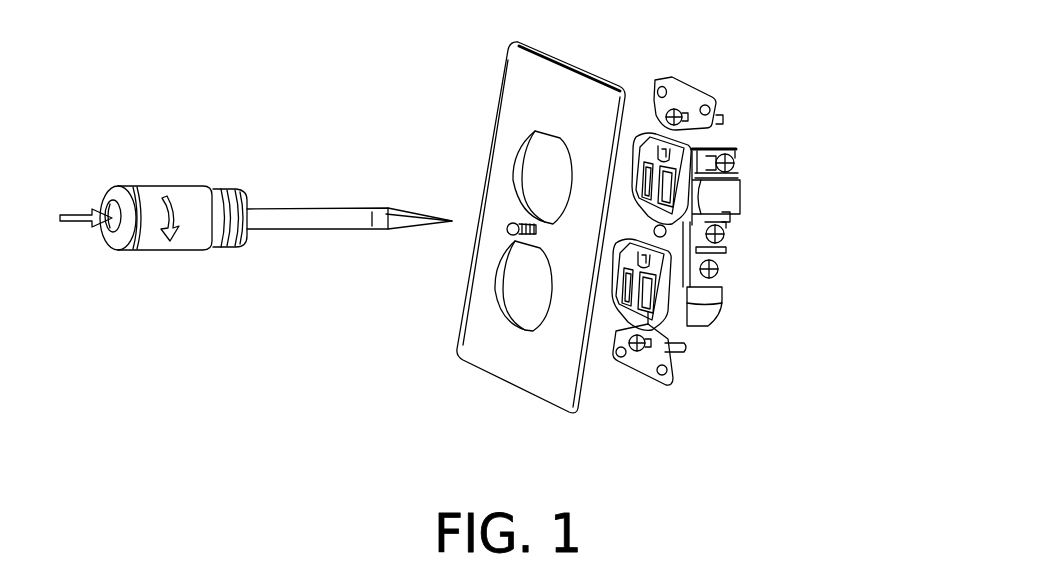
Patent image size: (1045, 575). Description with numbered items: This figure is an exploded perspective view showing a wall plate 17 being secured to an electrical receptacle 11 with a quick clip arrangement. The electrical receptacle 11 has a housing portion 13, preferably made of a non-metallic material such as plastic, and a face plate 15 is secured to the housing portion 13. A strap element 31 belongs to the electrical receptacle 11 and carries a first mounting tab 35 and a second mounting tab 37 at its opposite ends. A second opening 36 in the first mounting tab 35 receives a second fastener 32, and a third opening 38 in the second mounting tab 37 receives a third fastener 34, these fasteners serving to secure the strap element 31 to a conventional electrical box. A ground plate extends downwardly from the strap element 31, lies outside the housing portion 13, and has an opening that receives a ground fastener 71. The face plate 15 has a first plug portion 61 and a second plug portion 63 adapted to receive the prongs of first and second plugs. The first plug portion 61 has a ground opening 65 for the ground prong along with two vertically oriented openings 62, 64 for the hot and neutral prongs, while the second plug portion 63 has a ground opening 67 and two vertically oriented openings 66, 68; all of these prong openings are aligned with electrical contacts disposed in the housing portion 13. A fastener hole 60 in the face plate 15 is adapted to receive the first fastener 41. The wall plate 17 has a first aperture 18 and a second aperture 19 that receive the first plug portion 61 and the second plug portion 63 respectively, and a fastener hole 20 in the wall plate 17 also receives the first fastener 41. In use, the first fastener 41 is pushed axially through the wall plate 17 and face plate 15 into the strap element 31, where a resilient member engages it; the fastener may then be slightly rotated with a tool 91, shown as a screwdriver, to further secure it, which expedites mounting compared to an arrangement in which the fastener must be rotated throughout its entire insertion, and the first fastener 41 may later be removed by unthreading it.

The electrical receptacle 11 is at (728, 224).
The housing portion 13 is at (789, 195).
The face plate 15 is at (758, 316).
The wall plate 17 is at (494, 390).
The first aperture 18 is at (544, 130).
The second aperture 19 is at (517, 328).
The fastener hole 20 is at (528, 241).
The strap element 31 is at (742, 72).
The second fastener 32 is at (724, 132).
The third fastener 34 is at (675, 353).
The first mounting tab 35 is at (695, 76).
The second opening 36 is at (675, 109).
The second mounting tab 37 is at (664, 378).
The third opening 38 is at (641, 371).
The first fastener 41 is at (486, 184).
The fastener hole 60 is at (654, 230).
The first plug portion 61 is at (637, 130).
The vertically oriented opening 62 is at (640, 184).
The second plug portion 63 is at (688, 294).
The vertically oriented opening 64 is at (677, 194).
The ground opening 65 is at (737, 157).
The vertically oriented opening 66 is at (630, 289).
The ground opening 67 is at (655, 258).
The vertically oriented opening 68 is at (662, 290).
The ground fastener 71 is at (734, 172).
The tool 91 is at (320, 236).